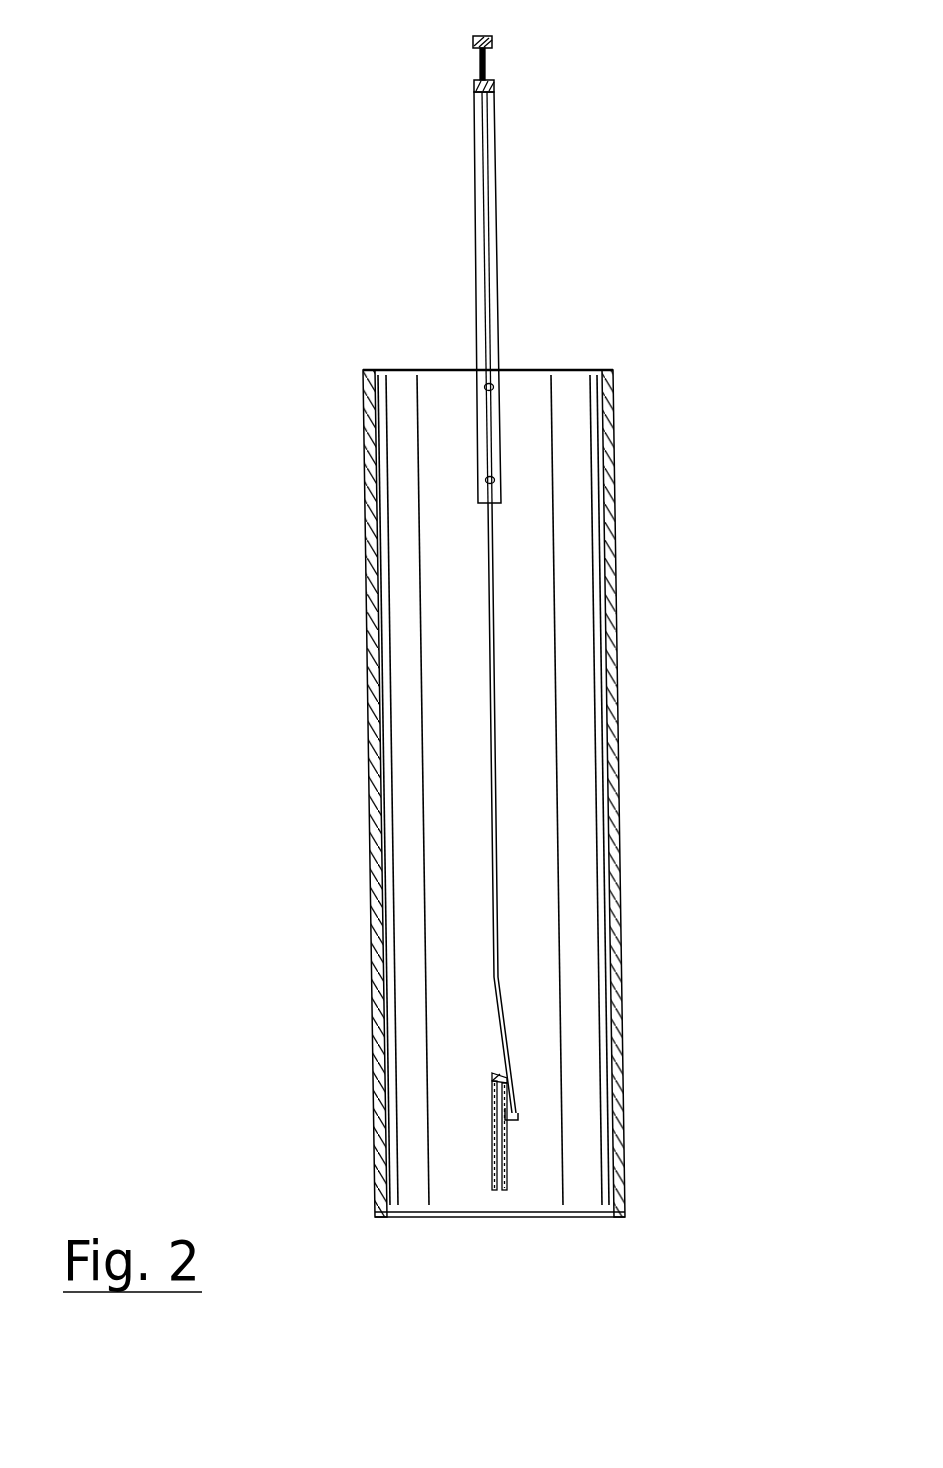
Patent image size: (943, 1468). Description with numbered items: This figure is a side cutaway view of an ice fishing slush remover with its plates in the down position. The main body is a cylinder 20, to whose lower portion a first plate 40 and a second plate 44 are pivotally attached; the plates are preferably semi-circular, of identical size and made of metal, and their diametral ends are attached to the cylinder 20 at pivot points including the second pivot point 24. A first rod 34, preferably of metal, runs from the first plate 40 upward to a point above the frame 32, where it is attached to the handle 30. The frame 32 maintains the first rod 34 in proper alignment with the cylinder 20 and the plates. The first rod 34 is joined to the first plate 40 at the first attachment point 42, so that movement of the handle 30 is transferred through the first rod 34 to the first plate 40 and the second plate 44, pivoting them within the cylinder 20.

The cylinder 20 is at (615, 637).
The second pivot point 24 is at (498, 1073).
The handle 30 is at (493, 40).
The frame 32 is at (471, 101).
The first rod 34 is at (495, 604).
The first plate 40 is at (507, 1180).
The first attachment point 42 is at (519, 1118).
The second plate 44 is at (495, 1180).